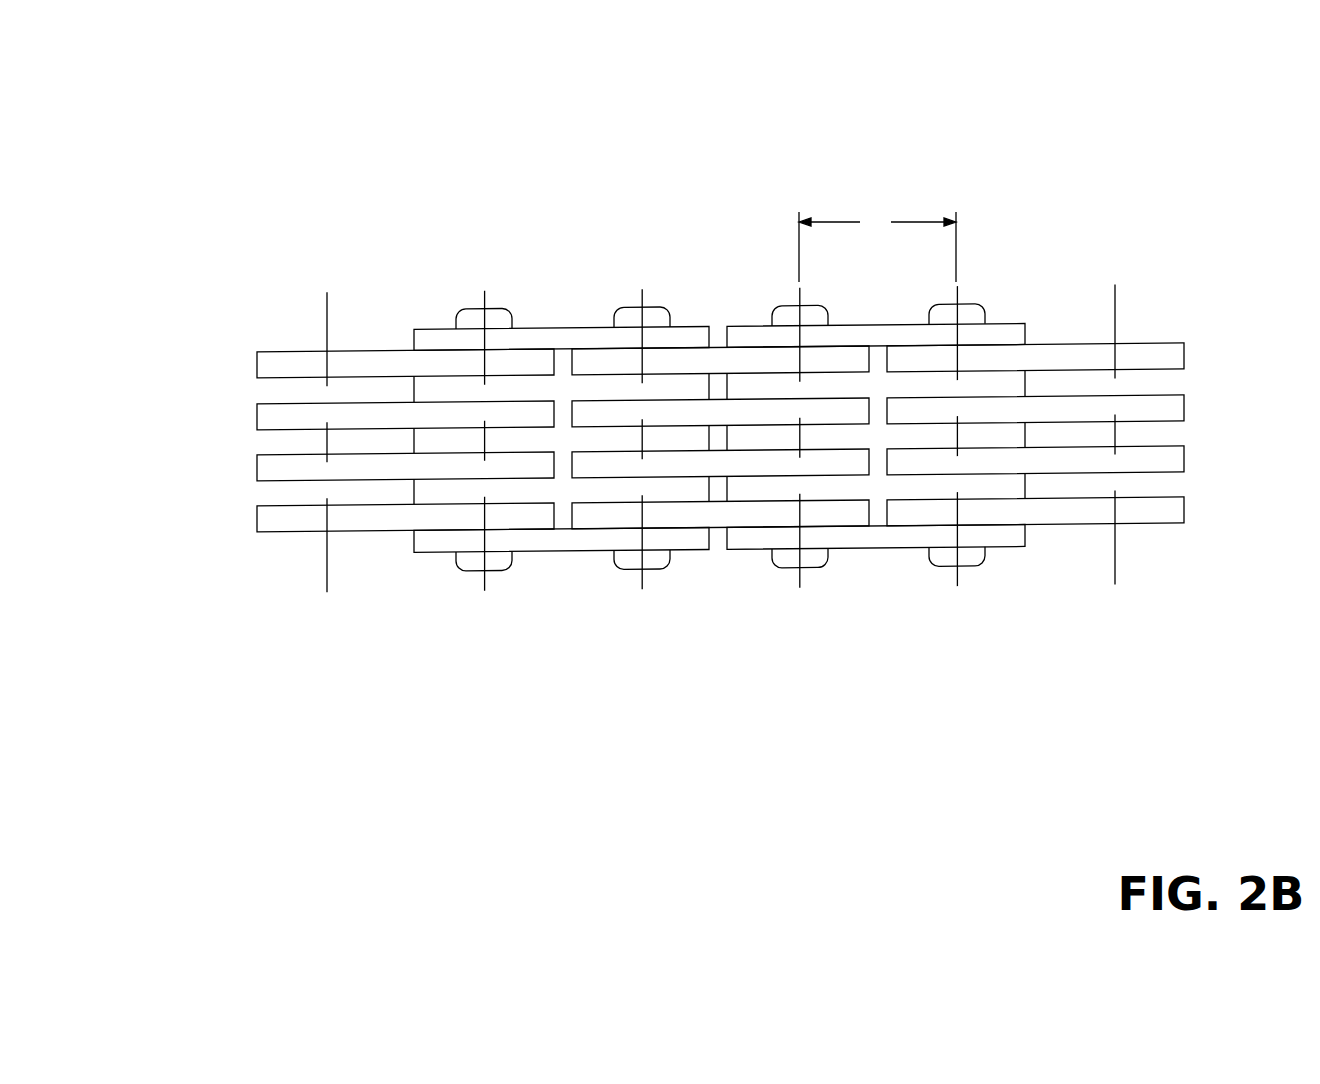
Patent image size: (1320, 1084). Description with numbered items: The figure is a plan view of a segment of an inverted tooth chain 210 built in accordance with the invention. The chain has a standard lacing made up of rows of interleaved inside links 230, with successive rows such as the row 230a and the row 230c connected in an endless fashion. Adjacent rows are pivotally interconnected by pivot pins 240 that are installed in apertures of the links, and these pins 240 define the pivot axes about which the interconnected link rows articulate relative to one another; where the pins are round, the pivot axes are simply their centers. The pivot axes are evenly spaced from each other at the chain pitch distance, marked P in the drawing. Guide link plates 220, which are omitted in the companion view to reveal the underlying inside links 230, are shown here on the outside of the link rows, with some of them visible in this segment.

The inverted tooth chain 210 is at (265, 163).
The guide link plates 220 is at (719, 437).
The inside links 230 is at (1035, 434).
The row of inside links 230a is at (720, 437).
The row of inside links 230c is at (405, 440).
The pivot pins 240 is at (720, 437).